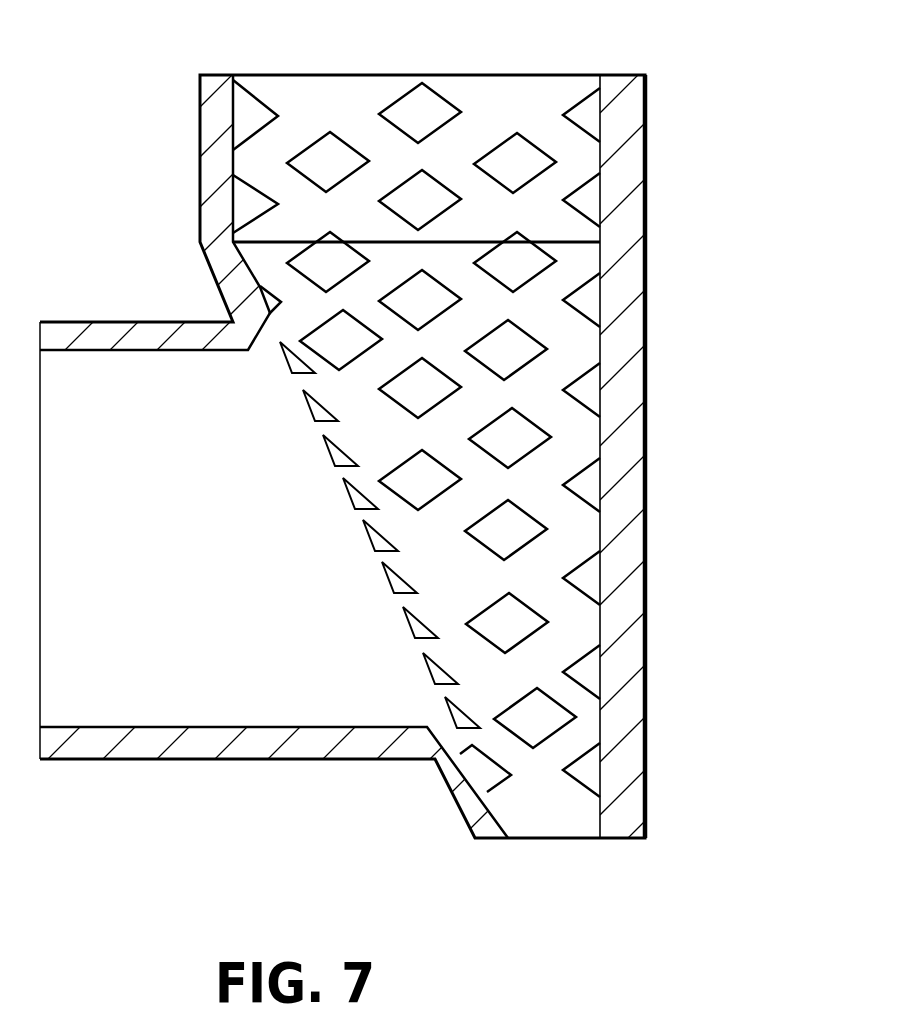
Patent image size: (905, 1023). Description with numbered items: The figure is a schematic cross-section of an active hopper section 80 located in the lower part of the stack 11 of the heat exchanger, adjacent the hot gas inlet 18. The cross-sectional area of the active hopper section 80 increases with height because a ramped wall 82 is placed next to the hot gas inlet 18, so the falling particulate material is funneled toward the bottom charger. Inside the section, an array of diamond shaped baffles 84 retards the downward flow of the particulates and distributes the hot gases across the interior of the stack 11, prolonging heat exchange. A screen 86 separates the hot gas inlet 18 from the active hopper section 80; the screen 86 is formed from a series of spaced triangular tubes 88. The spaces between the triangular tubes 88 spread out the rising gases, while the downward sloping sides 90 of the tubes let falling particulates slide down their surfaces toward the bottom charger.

The stack 11 is at (668, 143).
The hot gas inlet 18 is at (503, 100).
The active hopper section 80 is at (570, 338).
The ramped wall 82 is at (324, 535).
The diamond shaped baffles 84 is at (515, 433).
The screen 86 is at (392, 578).
The triangular tubes 88 is at (313, 368).
The downward sloping sides 90 is at (356, 420).